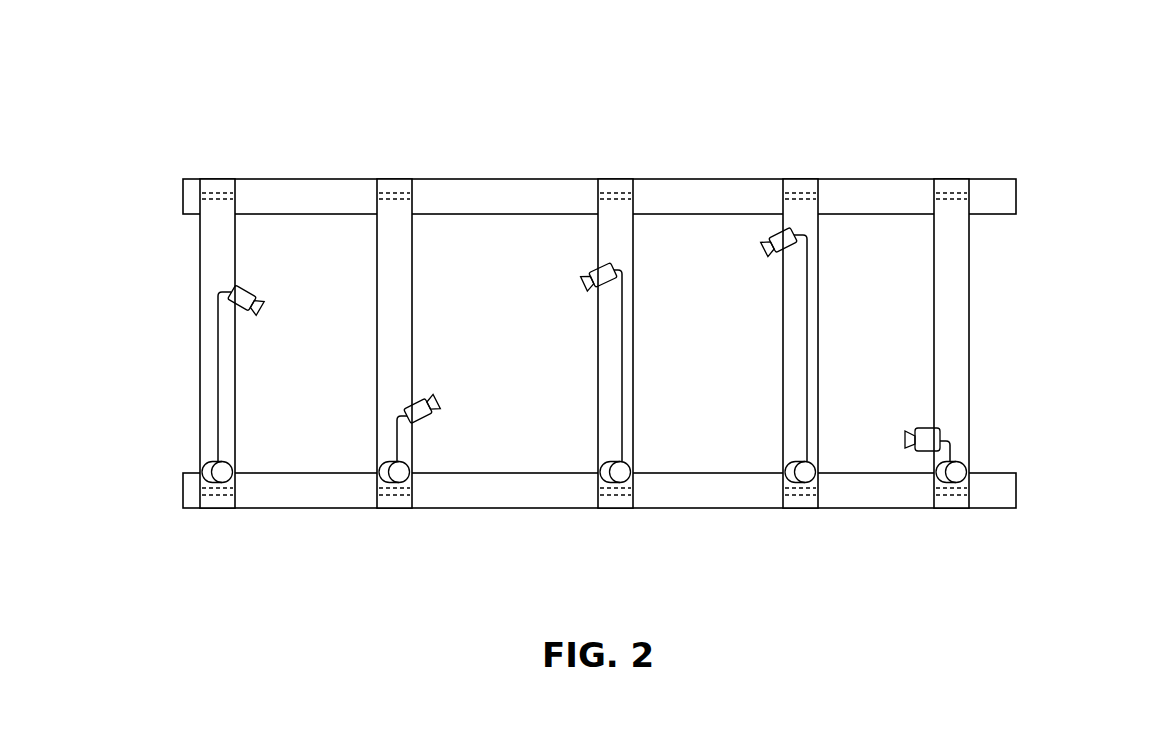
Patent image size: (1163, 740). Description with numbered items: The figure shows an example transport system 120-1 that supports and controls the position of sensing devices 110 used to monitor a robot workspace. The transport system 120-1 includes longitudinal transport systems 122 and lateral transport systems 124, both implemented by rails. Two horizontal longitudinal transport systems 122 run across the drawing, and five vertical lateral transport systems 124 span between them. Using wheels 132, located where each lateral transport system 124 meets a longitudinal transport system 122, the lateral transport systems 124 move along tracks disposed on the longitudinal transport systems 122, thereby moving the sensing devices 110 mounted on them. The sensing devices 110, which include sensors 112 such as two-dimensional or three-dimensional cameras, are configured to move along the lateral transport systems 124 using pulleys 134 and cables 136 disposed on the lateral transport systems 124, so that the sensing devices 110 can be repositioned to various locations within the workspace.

The transport system 120-1 is at (1042, 125).
The longitudinal transport systems 122 is at (307, 179).
The lateral transport systems 124 is at (236, 385).
The wheels 132 is at (218, 192).
The pulleys 134 is at (233, 472).
The cables 136 is at (218, 410).
The sensing devices 110 is at (268, 289).
The sensors 112 is at (905, 440).